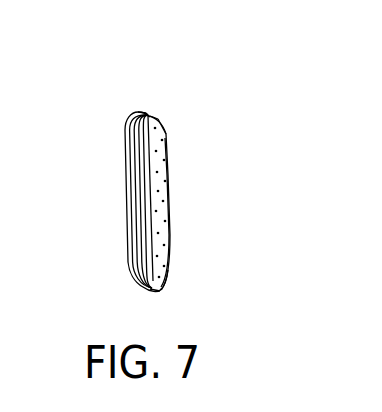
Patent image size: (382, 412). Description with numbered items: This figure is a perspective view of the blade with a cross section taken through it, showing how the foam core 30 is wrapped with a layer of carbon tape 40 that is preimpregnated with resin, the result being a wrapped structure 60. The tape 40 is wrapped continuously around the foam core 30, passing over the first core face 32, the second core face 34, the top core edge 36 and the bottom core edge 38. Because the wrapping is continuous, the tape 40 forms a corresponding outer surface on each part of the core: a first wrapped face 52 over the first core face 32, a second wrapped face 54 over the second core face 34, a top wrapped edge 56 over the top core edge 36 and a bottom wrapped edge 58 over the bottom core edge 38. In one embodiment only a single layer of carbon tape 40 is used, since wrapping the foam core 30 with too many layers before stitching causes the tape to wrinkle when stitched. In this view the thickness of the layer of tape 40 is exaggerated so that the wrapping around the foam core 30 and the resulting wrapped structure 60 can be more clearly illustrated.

The foam core 30 is at (150, 253).
The first core face 32 is at (147, 233).
The second core face 34 is at (172, 217).
The top core edge 36 is at (153, 115).
The bottom core edge 38 is at (166, 294).
The carbon tape 40 is at (162, 125).
The first wrapped face 52 is at (143, 152).
The second wrapped face 54 is at (172, 162).
The top wrapped edge 56 is at (158, 116).
The bottom wrapped edge 58 is at (170, 283).
The wrapped structure 60 is at (141, 102).